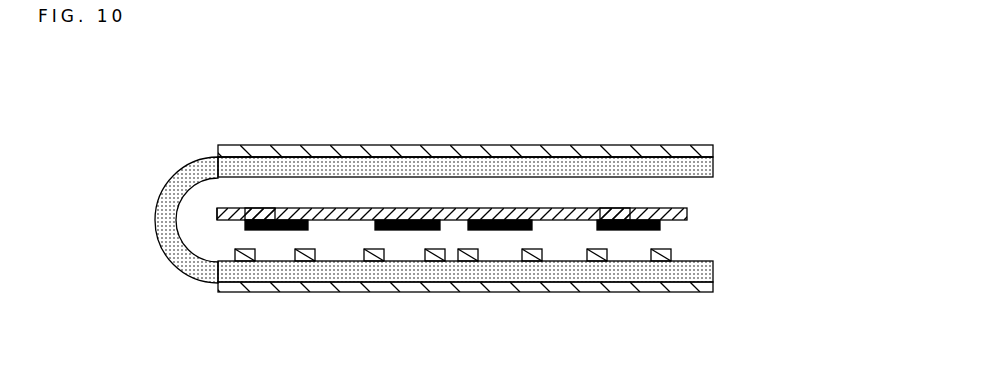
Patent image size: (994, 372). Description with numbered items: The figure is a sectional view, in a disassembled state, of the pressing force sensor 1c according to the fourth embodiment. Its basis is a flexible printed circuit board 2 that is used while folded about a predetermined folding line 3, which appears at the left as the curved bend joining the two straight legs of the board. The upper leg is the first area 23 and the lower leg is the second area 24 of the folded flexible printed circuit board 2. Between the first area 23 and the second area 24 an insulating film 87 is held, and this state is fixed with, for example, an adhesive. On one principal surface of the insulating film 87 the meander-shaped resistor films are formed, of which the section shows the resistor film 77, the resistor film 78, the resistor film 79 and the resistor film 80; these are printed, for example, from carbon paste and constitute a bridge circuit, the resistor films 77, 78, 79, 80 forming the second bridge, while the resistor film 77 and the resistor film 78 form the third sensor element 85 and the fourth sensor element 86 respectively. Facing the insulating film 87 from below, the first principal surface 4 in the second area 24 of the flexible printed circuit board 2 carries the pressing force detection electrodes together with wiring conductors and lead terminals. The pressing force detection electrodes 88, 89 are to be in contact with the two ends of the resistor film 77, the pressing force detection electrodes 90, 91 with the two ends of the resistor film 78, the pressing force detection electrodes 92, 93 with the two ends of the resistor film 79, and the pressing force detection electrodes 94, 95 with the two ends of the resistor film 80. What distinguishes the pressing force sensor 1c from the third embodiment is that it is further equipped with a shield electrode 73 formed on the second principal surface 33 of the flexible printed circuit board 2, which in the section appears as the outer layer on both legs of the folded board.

The pressing force sensor 1c is at (284, 61).
The flexible printed circuit board 2 is at (800, 145).
The folding line 3 is at (157, 213).
The first principal surface 4 is at (575, 258).
The first area 23 is at (713, 163).
The second area 24 is at (713, 265).
The second principal surface 33 is at (483, 157).
The shield electrode 73 is at (400, 146).
The resistor film 77 is at (275, 231).
The resistor film 78 is at (627, 231).
The resistor film 79 is at (405, 231).
The resistor film 80 is at (497, 231).
The third sensor element 85 is at (283, 203).
The fourth sensor element 86 is at (629, 203).
The insulating film 87 is at (218, 212).
The pressing force detection electrode 88 is at (242, 262).
The pressing force detection electrode 89 is at (303, 262).
The pressing force detection electrode 90 is at (598, 262).
The pressing force detection electrode 91 is at (660, 262).
The pressing force detection electrode 92 is at (373, 262).
The pressing force detection electrode 93 is at (437, 262).
The pressing force detection electrode 94 is at (467, 262).
The pressing force detection electrode 95 is at (528, 262).